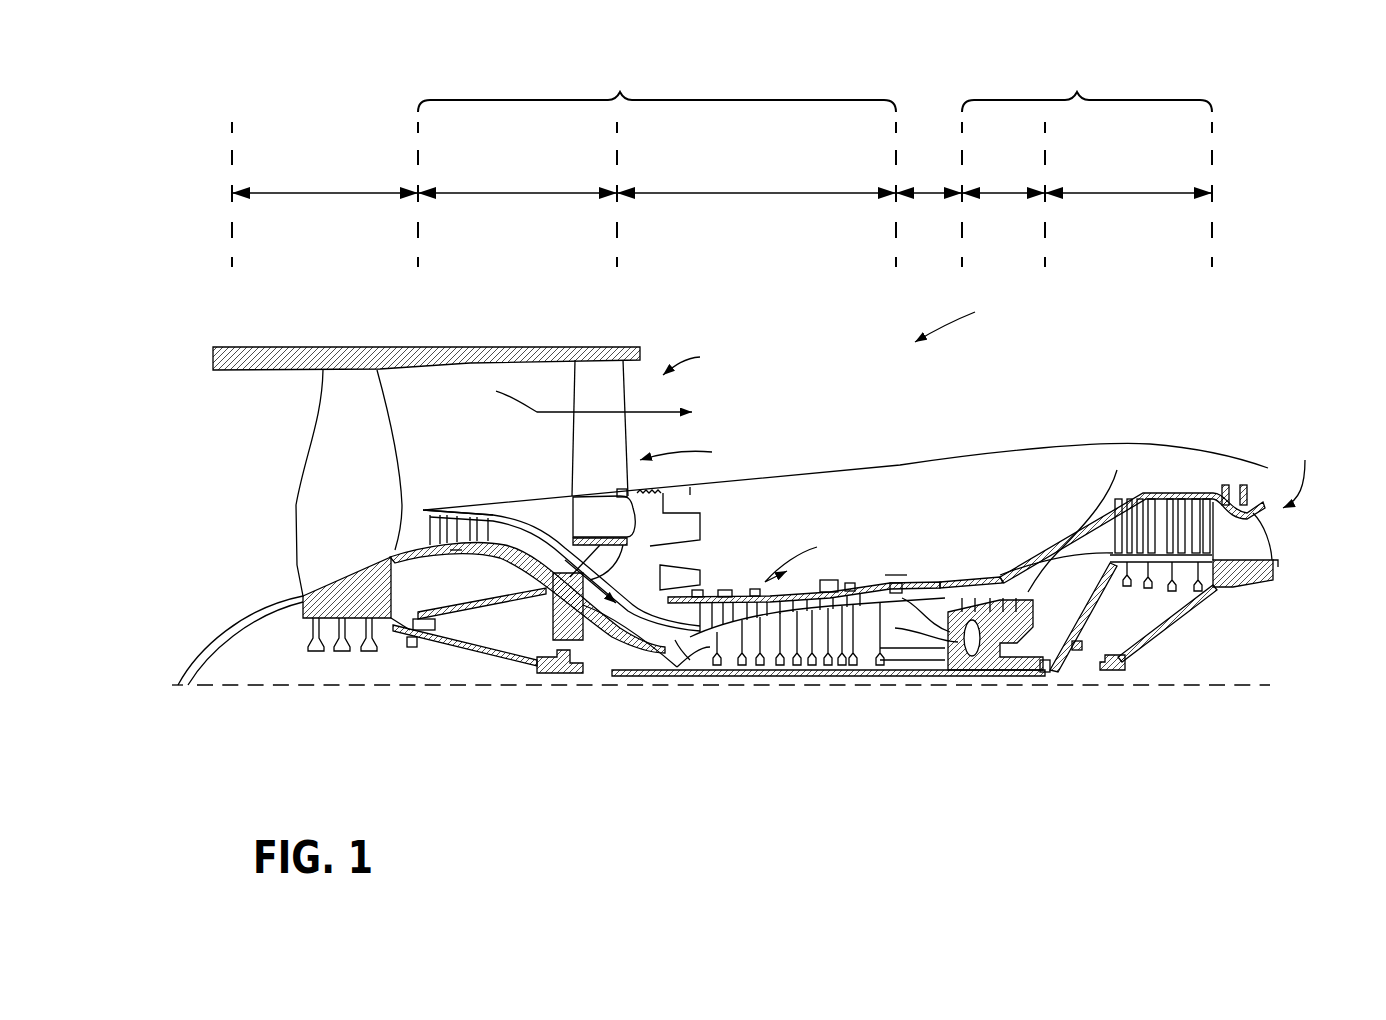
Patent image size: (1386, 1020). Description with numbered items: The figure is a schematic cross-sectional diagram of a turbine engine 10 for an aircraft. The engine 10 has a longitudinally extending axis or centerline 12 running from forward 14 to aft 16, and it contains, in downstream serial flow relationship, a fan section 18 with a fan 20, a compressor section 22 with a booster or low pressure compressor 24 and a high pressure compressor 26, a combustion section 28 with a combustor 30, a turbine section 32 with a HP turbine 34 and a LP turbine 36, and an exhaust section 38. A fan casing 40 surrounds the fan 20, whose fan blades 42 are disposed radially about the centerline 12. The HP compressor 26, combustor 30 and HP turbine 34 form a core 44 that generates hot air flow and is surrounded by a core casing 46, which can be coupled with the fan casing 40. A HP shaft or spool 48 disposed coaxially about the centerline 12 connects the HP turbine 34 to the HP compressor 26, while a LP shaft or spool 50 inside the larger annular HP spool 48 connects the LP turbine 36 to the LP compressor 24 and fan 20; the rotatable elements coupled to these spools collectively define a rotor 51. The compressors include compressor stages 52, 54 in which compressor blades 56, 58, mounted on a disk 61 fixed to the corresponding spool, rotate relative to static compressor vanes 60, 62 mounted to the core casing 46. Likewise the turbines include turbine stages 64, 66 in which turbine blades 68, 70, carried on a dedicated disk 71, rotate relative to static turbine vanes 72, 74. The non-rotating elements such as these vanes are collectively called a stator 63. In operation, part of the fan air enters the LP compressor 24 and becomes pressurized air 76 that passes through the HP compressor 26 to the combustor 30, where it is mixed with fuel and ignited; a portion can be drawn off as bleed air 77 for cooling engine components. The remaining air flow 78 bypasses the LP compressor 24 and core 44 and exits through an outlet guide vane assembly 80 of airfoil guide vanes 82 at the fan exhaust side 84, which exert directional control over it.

The turbine engine 10 is at (959, 315).
The centerline 12 is at (326, 688).
The forward 14 is at (204, 472).
The aft 16 is at (1316, 547).
The fan section 18 is at (325, 179).
The fan 20 is at (268, 541).
The compressor section 22 is at (657, 86).
The low pressure compressor 24 is at (517, 179).
The high pressure compressor 26 is at (756, 179).
The combustion section 28 is at (929, 174).
The combustor 30 is at (932, 605).
The turbine section 32 is at (1087, 86).
The HP turbine 34 is at (1003, 179).
The LP turbine 36 is at (1128, 179).
The exhaust section 38 is at (1266, 507).
The fan casing 40 is at (456, 347).
The fan blades 42 is at (378, 418).
The core 44 is at (878, 505).
The core casing 46 is at (1087, 512).
The HP shaft or spool 48 is at (910, 652).
The LP shaft or spool 50 is at (552, 690).
The rotor 51 is at (790, 682).
The compressor stages 52 is at (476, 446).
The compressor stages 54 is at (742, 498).
The compressor blades 56 is at (448, 514).
The compressor blades 58 is at (670, 600).
The static compressor vanes 60 is at (432, 514).
The disk 61 is at (450, 554).
The static compressor vanes 62 is at (667, 587).
The stator 63 is at (667, 648).
The turbine stages 64 is at (1025, 522).
The turbine stages 66 is at (1197, 395).
The turbine blades 68 is at (975, 598).
The turbine blades 70 is at (1200, 503).
The disk 71 is at (980, 652).
The static turbine vanes 72 is at (958, 598).
The static turbine vanes 74 is at (1185, 512).
The pressurized air 76 is at (622, 575).
The bleed air 77 is at (802, 550).
The air flow 78 is at (580, 391).
The outlet guide vane assembly 80 is at (692, 449).
The airfoil guide vanes 82 is at (575, 447).
The fan exhaust side 84 is at (699, 359).